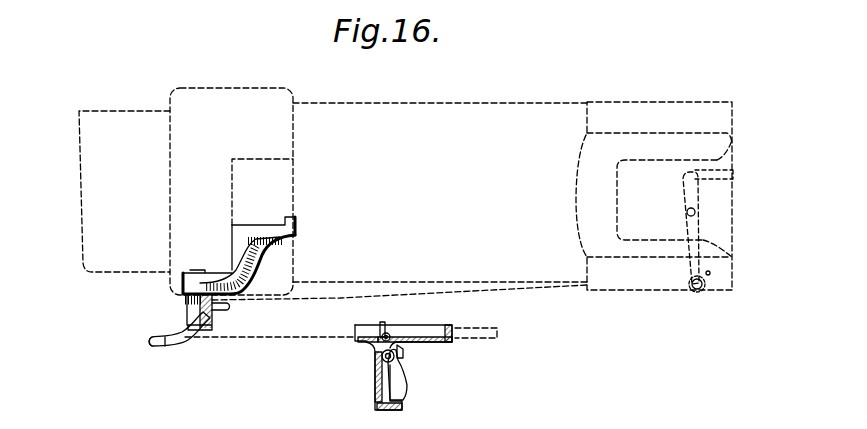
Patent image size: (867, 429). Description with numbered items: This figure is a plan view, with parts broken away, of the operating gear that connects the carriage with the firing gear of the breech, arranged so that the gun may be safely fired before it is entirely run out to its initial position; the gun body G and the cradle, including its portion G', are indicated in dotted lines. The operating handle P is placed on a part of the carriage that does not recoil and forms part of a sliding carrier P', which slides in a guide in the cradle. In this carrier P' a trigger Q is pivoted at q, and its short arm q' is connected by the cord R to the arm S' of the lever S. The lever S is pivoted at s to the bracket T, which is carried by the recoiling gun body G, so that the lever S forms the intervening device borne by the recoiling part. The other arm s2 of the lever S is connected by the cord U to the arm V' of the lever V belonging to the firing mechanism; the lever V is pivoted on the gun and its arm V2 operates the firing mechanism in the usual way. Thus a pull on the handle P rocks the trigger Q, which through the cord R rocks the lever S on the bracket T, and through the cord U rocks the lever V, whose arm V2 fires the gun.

The gun body G is at (405, 196).
The frame extension G' is at (231, 191).
The bracket T is at (258, 255).
The cord U is at (415, 295).
The cord R is at (257, 338).
The lever S is at (179, 326).
The arm of lever S S' is at (148, 354).
The pivot s is at (213, 332).
The arm of lever S s2 is at (230, 307).
The handle P is at (363, 379).
The sliding carrier P' is at (414, 323).
The trigger Q is at (403, 383).
The pivot q is at (363, 363).
The short arm of trigger q' is at (347, 351).
The lever of the firing mechanism V is at (704, 228).
The arm of lever V V' is at (690, 298).
The arm of lever V V2 is at (733, 170).